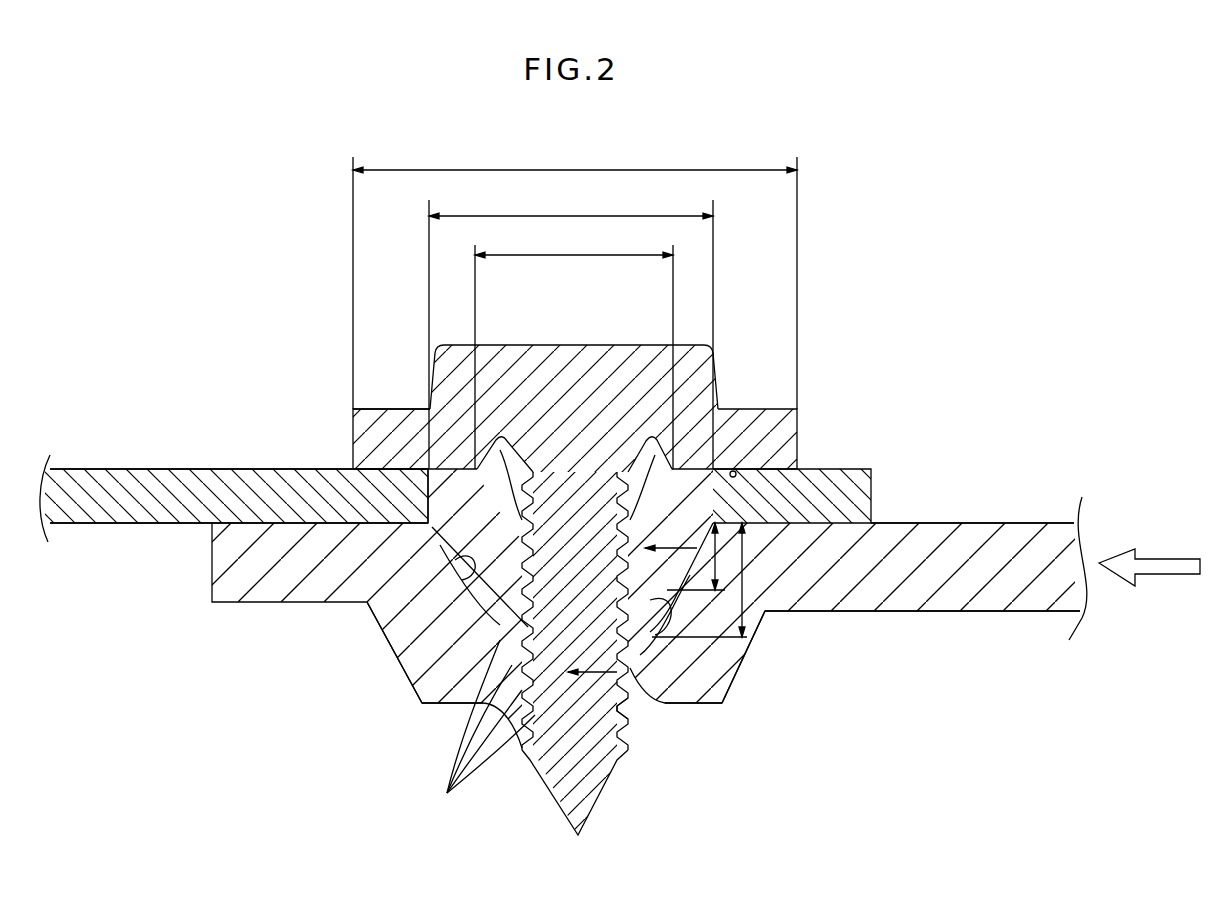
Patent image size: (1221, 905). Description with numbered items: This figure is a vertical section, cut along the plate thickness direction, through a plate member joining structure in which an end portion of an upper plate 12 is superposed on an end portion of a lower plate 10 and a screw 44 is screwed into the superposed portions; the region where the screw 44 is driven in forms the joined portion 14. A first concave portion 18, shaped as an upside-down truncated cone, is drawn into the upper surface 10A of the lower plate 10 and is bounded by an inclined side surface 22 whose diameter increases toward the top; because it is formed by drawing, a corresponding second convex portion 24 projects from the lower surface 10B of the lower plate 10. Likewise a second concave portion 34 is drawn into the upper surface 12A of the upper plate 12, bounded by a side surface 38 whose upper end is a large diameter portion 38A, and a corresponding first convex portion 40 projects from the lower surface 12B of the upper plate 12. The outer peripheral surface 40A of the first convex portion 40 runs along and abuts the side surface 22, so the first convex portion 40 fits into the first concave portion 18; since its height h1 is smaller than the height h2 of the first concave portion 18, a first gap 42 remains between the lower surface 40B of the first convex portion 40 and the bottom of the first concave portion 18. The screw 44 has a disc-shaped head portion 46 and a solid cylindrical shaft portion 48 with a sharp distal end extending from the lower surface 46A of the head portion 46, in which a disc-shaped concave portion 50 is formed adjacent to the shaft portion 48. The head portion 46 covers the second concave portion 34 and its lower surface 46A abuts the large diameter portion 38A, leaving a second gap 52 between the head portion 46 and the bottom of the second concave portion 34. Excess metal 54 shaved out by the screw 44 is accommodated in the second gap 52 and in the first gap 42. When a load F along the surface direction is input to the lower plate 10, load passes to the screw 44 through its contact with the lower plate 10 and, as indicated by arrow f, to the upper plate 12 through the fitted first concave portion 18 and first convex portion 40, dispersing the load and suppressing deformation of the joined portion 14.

The lower plate 10 is at (1008, 612).
The upper surface of the lower plate 10A is at (1022, 523).
The lower surface of the lower plate 10B is at (921, 612).
The upper plate 12 is at (92, 468).
The upper surface of the upper plate 12A is at (140, 468).
The lower surface of the upper plate 12B is at (122, 524).
The joined portion 14 is at (757, 715).
The first concave portion 18 is at (413, 615).
The side surface 22 is at (427, 704).
The second convex portion 24 is at (742, 670).
The second concave portion 34 is at (655, 490).
The side surface 38 is at (500, 440).
The large diameter portion 38A is at (719, 464).
The first convex portion 40 is at (395, 590).
The outer peripheral surface 40A is at (457, 567).
The lower surface of the first convex portion 40B is at (665, 640).
The first gap 42 is at (648, 700).
The screw 44 is at (380, 408).
The head portion 46 is at (350, 455).
The lower surface of the head portion 46A is at (700, 462).
The shaft portion 48 is at (577, 772).
The concave portion 50 is at (542, 443).
The second gap 52 is at (431, 549).
The excess metal 54 is at (473, 729).
The height dimension h1 is at (720, 524).
The height dimension h2 is at (748, 575).
The arrow f is at (688, 548).
The load F is at (1165, 550).